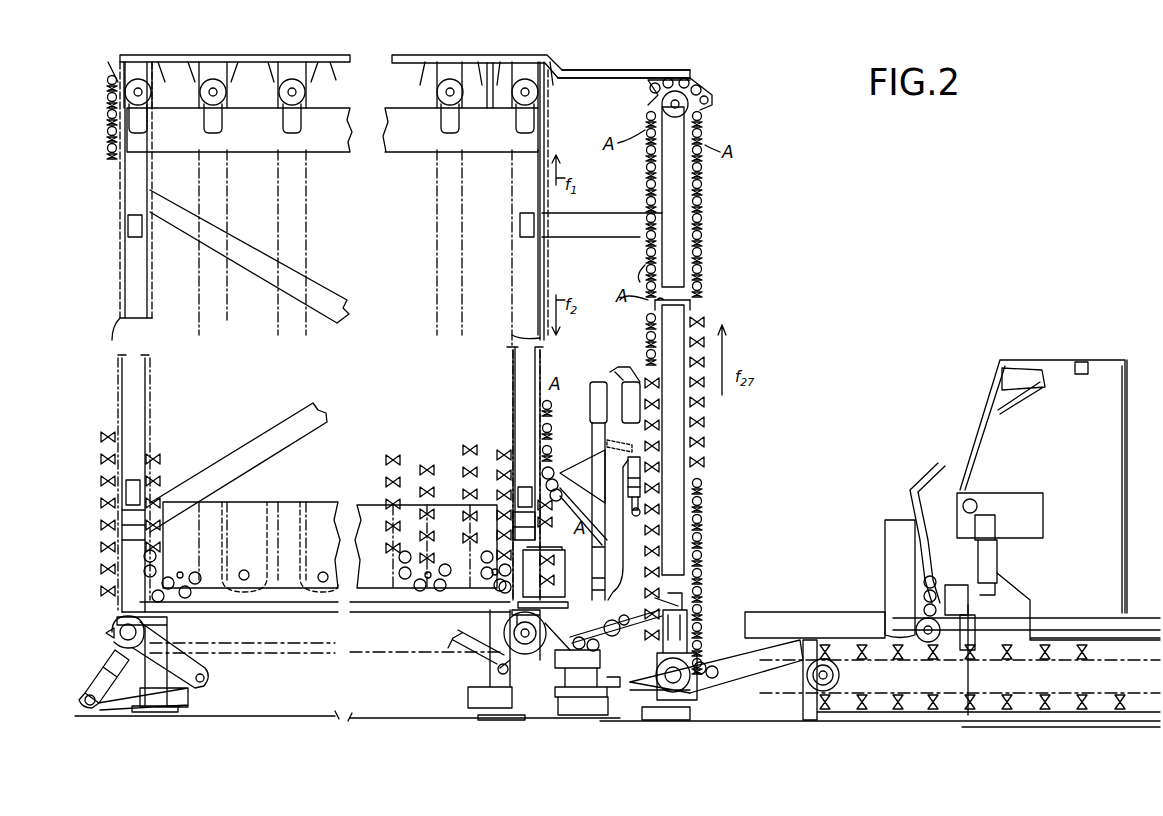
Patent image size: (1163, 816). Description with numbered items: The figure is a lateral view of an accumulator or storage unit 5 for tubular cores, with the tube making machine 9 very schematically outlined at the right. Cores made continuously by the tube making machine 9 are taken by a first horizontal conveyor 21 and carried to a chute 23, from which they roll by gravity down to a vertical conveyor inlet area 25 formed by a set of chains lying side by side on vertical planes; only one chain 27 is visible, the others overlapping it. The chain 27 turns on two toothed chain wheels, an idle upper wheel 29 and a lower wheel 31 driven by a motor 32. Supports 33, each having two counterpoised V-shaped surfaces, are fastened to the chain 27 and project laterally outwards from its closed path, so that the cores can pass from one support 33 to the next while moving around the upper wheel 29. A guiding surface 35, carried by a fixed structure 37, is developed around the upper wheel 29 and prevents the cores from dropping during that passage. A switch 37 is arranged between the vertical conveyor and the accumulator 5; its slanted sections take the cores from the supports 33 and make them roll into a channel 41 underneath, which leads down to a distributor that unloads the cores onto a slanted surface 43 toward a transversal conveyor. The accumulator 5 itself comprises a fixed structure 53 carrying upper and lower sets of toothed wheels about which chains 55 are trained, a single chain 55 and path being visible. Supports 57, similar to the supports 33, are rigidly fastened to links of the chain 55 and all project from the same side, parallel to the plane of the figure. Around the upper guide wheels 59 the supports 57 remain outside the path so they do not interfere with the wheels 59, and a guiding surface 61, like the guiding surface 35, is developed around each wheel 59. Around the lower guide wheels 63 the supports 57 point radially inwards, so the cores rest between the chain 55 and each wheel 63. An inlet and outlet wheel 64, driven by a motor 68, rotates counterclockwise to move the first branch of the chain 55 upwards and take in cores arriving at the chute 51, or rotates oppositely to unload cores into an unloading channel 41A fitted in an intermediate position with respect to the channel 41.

The accumulator 5 is at (378, 66).
The tube making machine 9 is at (1007, 343).
The first horizontal conveyor 21 is at (884, 703).
The chute 23 is at (752, 672).
The vertical conveyor inlet area 25 is at (716, 80).
The chain 27 is at (704, 182).
The upper toothed chain wheel 29 is at (706, 100).
The lower toothed chain wheel 31 is at (675, 671).
The motor 32 is at (693, 692).
The supports 33 is at (700, 262).
The guiding surface 35 is at (648, 95).
The fixed structure / switch 37 is at (610, 72).
The channel 41 is at (618, 376).
The unloading channel 41A is at (565, 498).
The slanted surface 43 is at (580, 622).
The chute 51 is at (578, 468).
The fixed structure 53 is at (518, 62).
The chain 55 is at (112, 300).
The supports 57 is at (103, 438).
The upper guide wheels 59 is at (478, 62).
The guiding surface 61 is at (108, 84).
The lower guide wheels 63 is at (196, 607).
The inlet and outlet wheel 64 is at (505, 635).
The motor 68 is at (545, 660).